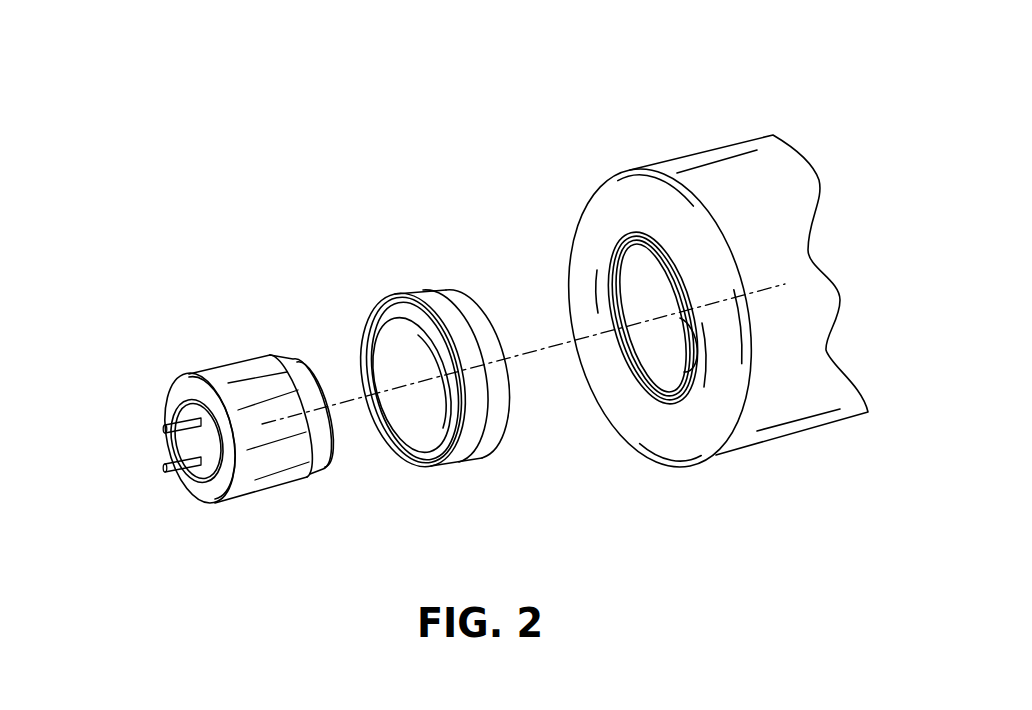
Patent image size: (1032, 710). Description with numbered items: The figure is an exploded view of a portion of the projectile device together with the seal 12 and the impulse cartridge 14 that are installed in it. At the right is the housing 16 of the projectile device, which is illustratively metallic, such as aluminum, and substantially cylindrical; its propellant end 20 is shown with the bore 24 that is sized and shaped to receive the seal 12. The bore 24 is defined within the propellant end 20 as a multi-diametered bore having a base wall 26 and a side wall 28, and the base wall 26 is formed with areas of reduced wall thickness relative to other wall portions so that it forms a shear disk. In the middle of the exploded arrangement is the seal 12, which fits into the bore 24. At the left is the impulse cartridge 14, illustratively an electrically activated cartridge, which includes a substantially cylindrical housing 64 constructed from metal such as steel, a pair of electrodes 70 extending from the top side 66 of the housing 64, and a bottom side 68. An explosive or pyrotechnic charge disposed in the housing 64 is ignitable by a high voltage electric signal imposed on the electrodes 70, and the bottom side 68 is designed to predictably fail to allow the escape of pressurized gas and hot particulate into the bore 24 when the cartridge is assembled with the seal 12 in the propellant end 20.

The seal 12 is at (400, 280).
The impulse cartridge 14 is at (207, 405).
The housing 16 is at (676, 274).
The propellant end 20 is at (590, 198).
The bore 24 is at (601, 353).
The base wall 26 is at (677, 292).
The side wall 28 is at (655, 360).
The housing 64 is at (245, 372).
The top side 66 is at (212, 467).
The bottom side 68 is at (329, 430).
The electrodes 70 is at (163, 429).